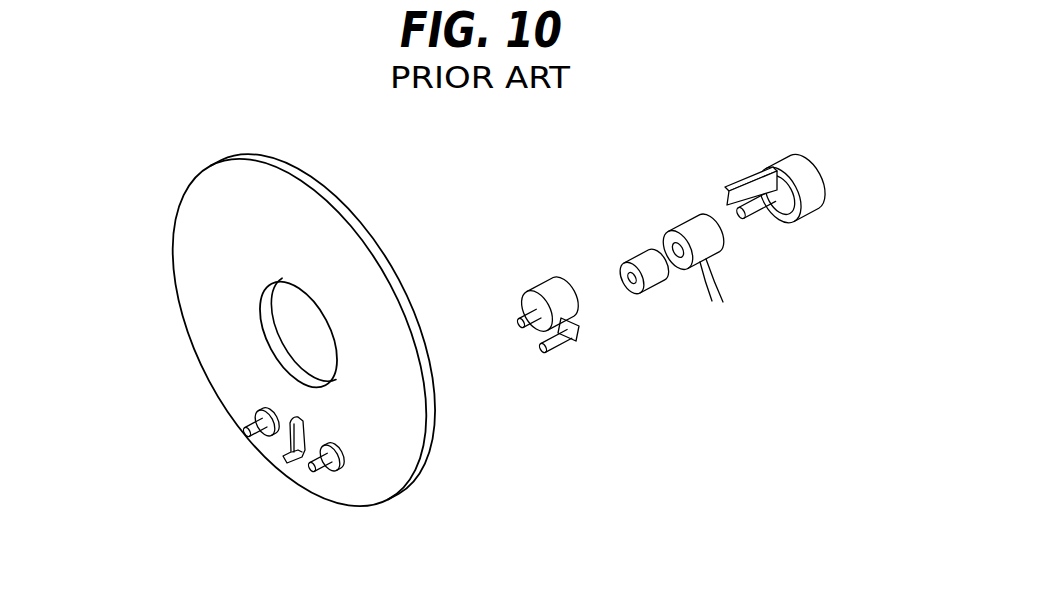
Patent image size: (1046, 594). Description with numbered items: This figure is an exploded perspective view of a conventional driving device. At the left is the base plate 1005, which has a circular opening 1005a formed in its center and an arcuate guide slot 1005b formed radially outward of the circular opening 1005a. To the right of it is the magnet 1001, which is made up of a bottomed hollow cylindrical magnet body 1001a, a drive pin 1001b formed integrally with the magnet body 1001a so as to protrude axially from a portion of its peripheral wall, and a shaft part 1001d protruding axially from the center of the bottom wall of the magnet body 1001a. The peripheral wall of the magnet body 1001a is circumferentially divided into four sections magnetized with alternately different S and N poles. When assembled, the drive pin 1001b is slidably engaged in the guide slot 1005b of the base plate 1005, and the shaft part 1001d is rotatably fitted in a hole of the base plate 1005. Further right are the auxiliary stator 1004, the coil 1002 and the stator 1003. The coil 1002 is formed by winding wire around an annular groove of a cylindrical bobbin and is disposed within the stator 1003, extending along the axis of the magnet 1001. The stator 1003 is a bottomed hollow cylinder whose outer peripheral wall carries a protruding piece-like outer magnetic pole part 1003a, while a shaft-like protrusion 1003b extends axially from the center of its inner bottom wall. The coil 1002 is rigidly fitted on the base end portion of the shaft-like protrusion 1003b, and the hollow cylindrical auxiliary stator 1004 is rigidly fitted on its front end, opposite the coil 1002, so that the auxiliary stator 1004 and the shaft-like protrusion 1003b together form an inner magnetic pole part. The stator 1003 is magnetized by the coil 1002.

The magnet 1001 is at (545, 287).
The magnet body 1001a is at (577, 290).
The drive pin 1001b is at (567, 350).
The shaft part 1001d is at (523, 316).
The coil 1002 is at (692, 225).
The stator 1003 is at (807, 202).
The outer magnetic pole part 1003a is at (738, 178).
The shaft-like protrusion 1003b is at (763, 220).
The auxiliary stator 1004 is at (655, 280).
The base plate 1005 is at (287, 196).
The circular opening 1005a is at (268, 346).
The arcuate guide slot 1005b is at (277, 458).